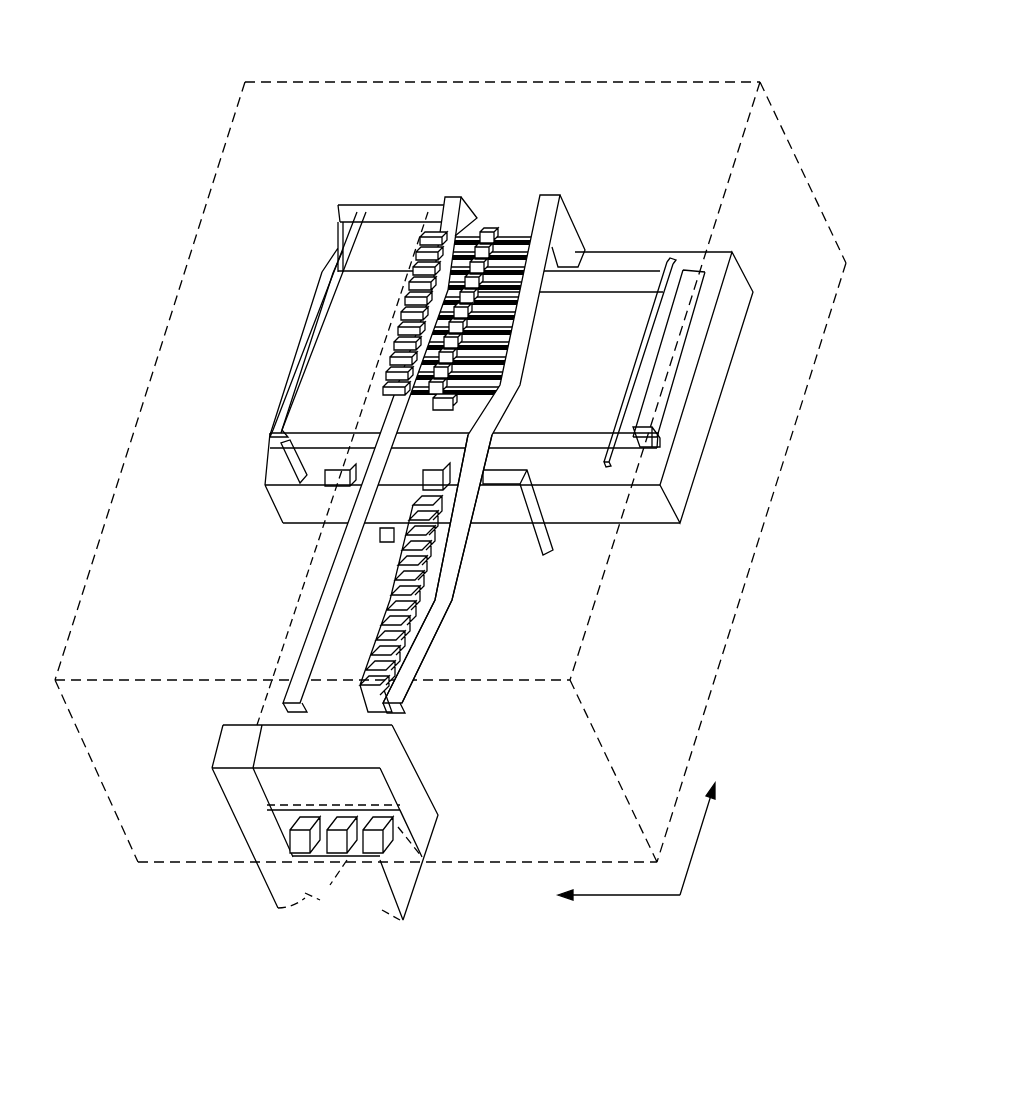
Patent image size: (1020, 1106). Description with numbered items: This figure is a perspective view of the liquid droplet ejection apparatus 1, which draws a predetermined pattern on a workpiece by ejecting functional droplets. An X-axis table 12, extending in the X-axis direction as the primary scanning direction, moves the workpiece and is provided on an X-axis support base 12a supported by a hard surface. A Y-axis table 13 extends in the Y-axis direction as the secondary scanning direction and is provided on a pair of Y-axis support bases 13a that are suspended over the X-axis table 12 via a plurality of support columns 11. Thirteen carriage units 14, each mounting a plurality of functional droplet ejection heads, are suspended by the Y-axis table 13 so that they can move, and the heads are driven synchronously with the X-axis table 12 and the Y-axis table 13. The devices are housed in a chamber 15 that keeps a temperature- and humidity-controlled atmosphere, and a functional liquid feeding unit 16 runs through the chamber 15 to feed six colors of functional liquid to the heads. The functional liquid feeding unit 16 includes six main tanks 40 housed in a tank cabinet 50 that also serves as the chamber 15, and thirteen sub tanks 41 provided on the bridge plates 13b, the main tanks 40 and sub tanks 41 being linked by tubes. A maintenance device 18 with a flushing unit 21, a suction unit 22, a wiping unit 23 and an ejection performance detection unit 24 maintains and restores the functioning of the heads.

The liquid droplet ejection apparatus 1 is at (517, 57).
The support columns 11 is at (330, 490).
The X-axis table 12 is at (536, 362).
The X-axis support base 12a is at (737, 322).
The Y-axis table 13 is at (516, 152).
The Y-axis support bases 13a is at (451, 195).
The bridge plates 13b is at (520, 288).
The carriage units 14 is at (491, 217).
The chamber 15 is at (145, 397).
The functional liquid feeding unit 16 is at (194, 717).
The maintenance device 18 is at (545, 585).
The flushing unit 21 is at (265, 351).
The suction unit 22 is at (465, 593).
The wiping unit 23 is at (435, 485).
The ejection performance detection unit 24 is at (668, 258).
The main tanks 40 is at (375, 848).
The sub tanks 41 is at (421, 238).
The tank cabinet 50 is at (410, 788).